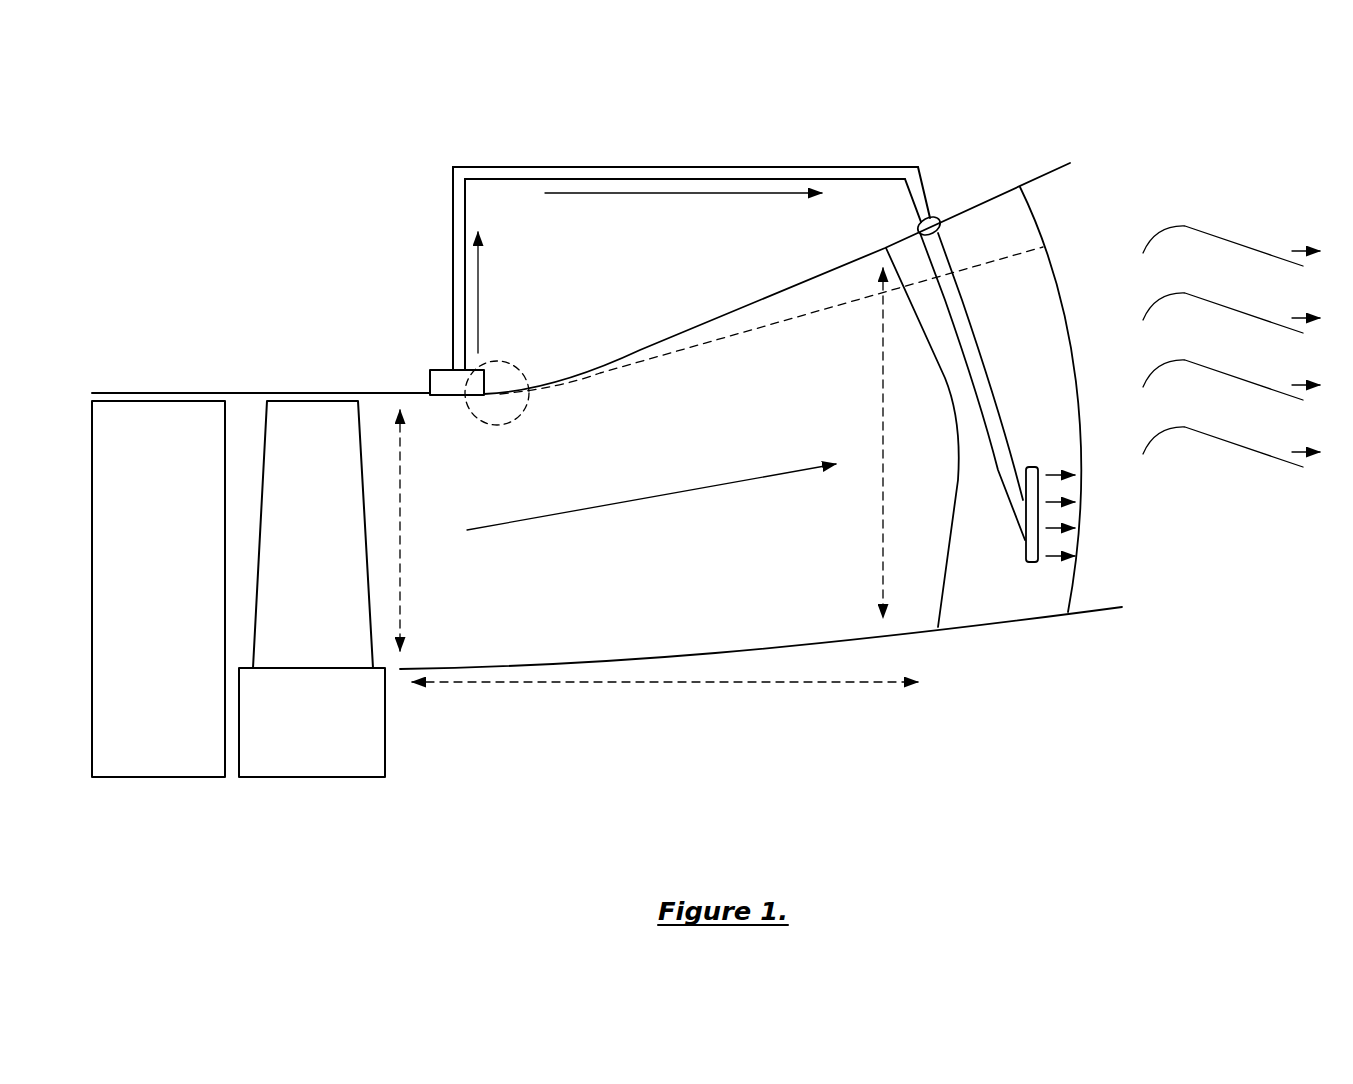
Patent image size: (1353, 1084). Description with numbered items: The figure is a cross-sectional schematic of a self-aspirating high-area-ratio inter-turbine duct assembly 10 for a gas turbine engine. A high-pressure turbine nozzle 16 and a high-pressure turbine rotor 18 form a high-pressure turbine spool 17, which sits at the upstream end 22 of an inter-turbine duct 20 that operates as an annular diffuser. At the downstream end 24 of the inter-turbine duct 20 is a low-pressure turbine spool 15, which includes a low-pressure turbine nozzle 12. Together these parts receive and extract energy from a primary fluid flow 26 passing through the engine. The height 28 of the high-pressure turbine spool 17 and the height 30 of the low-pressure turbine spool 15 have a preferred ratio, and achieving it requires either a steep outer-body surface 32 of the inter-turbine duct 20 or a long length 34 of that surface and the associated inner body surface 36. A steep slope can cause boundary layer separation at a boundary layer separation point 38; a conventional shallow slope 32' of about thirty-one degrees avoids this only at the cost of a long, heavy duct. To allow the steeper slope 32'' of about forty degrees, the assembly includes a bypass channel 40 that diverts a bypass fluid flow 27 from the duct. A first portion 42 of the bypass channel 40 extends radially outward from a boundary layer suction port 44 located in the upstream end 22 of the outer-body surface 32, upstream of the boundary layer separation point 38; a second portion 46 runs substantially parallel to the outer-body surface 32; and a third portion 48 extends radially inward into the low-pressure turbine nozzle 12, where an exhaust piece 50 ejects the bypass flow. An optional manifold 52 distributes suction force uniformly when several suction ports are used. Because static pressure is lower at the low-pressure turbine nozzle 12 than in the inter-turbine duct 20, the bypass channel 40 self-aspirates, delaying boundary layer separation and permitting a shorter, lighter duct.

The self-aspirating high-area-ratio inter-turbine duct assembly 10 is at (994, 99).
The low-pressure turbine nozzle 12 is at (1007, 620).
The low-pressure turbine spool 15 is at (1194, 672).
The high-pressure turbine nozzle 16 is at (161, 777).
The high-pressure turbine spool 17 is at (302, 848).
The high-pressure turbine rotor 18 is at (318, 777).
The inter-turbine duct 20 is at (560, 667).
The upstream end 22 is at (428, 713).
The downstream end 24 is at (913, 711).
The primary fluid flow 26 is at (658, 495).
The bypass fluid flow 27 is at (637, 197).
The height 28 is at (403, 503).
The height 30 is at (883, 407).
The outer-body surface 32 is at (777, 278).
The outer-body surface slope 32' is at (771, 320).
The outer-body surface slope 32'' is at (772, 240).
The length 34 is at (472, 682).
The inner body surface 36 is at (648, 668).
The boundary layer separation point 38 is at (512, 362).
The bypass channel 40 is at (705, 153).
The first portion 42 is at (452, 223).
The boundary layer suction port 44 is at (461, 403).
The second portion 46 is at (811, 166).
The third portion 48 is at (980, 357).
The exhaust piece 50 is at (1033, 467).
The manifold 52 is at (430, 370).